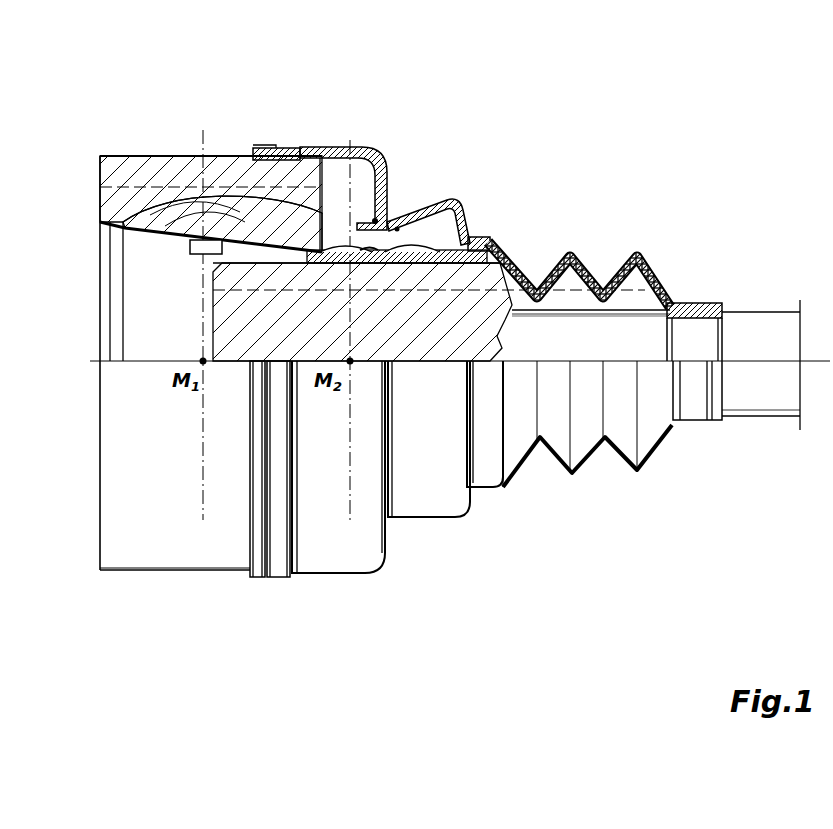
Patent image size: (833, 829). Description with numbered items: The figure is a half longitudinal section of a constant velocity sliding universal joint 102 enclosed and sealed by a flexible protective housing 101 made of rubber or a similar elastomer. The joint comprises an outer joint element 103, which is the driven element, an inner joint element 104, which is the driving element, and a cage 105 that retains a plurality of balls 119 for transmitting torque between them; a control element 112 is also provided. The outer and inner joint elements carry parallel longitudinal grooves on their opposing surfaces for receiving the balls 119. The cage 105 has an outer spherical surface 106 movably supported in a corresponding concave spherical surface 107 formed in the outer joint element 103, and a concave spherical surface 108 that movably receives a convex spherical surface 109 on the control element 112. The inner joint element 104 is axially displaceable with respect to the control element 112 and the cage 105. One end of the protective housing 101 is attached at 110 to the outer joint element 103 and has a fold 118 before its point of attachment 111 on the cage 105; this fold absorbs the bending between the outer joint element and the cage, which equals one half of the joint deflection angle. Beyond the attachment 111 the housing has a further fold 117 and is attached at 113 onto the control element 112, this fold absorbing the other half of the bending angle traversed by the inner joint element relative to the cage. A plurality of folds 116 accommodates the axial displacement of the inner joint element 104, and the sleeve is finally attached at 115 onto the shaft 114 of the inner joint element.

The protective housing 101 is at (583, 638).
The constant velocity sliding universal joint 102 is at (208, 628).
The outer joint element 103 is at (105, 180).
The inner joint element 104 is at (464, 283).
The cage 105 is at (173, 220).
The outer spherical surface 106 is at (182, 195).
The concave spherical surface 107 is at (203, 196).
The concave spherical surface 108 is at (356, 146).
The convex spherical surface 109 is at (385, 215).
The attachment point 110 is at (273, 146).
The point of attachment 111 is at (398, 228).
The control element 112 is at (370, 256).
The attachment point 113 is at (474, 240).
The shaft 114 is at (753, 328).
The attachment point 115 is at (690, 303).
The folds 116 is at (572, 256).
The fold 117 is at (452, 203).
The fold 118 is at (376, 220).
The balls 119 is at (298, 210).